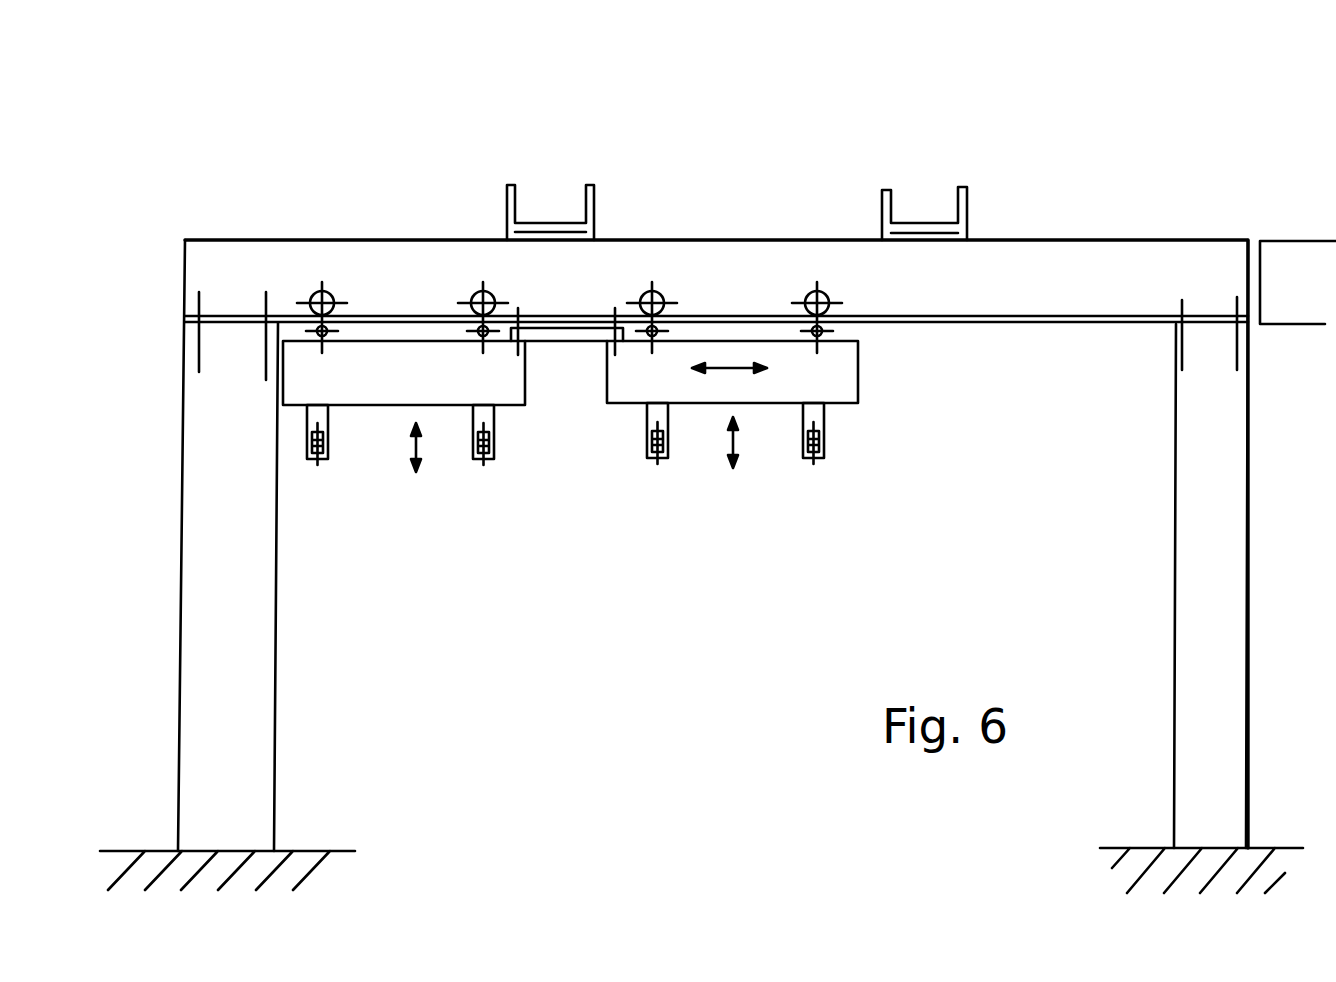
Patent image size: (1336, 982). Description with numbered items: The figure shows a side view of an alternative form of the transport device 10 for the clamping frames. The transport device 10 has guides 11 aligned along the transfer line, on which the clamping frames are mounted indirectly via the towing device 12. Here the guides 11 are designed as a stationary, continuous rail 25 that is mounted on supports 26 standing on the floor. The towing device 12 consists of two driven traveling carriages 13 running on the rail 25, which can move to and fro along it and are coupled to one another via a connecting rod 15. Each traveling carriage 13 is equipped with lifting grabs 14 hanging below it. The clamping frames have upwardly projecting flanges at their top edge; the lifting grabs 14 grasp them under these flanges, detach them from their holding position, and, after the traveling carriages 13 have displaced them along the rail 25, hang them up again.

The transport device 10 is at (747, 227).
The guide 11 is at (1286, 298).
The rail 25 is at (1117, 287).
The towing device 12 is at (527, 388).
The traveling carriage 13 is at (365, 385).
The lifting grab 14 is at (328, 462).
The connecting rod 15 is at (737, 263).
The support 26 is at (253, 635).